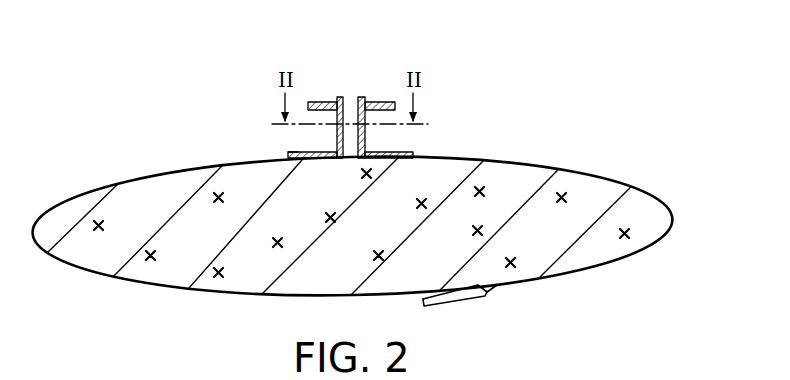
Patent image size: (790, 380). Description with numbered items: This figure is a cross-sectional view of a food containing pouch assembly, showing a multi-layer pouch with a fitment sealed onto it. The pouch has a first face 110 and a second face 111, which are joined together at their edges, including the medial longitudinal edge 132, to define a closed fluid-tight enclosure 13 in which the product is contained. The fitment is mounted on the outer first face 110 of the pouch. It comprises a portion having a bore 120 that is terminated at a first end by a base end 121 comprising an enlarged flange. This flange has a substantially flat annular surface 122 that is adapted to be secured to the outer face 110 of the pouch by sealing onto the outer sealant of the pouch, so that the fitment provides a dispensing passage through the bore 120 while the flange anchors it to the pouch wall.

The first face 110 is at (508, 162).
The closed fluid-tight enclosure 13 is at (632, 206).
The bore 120 is at (353, 98).
The base end 121 is at (413, 154).
The flat annular surface 122 is at (296, 157).
The second face 111 is at (207, 290).
The medial longitudinal edge 132 is at (466, 302).